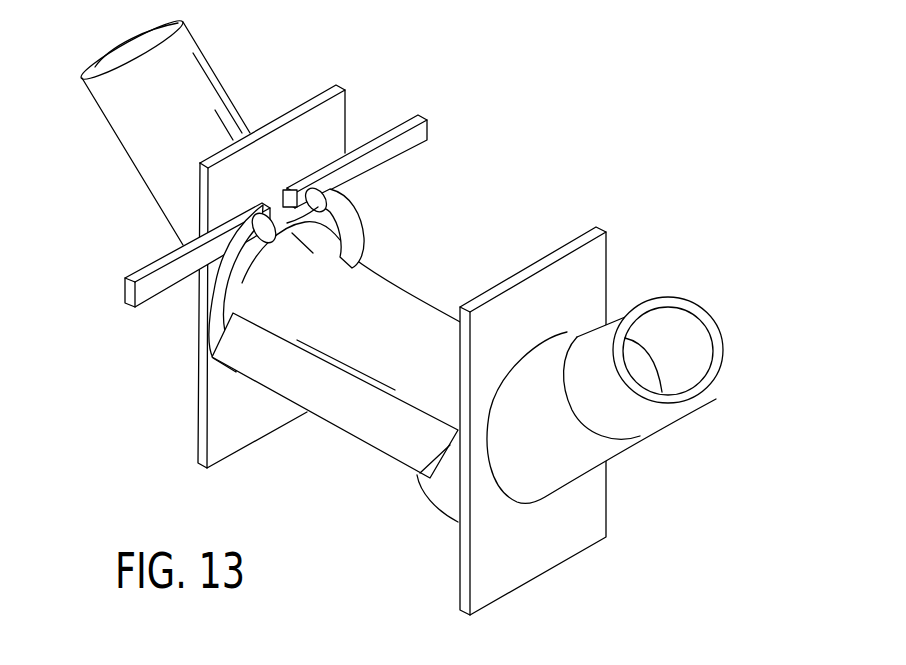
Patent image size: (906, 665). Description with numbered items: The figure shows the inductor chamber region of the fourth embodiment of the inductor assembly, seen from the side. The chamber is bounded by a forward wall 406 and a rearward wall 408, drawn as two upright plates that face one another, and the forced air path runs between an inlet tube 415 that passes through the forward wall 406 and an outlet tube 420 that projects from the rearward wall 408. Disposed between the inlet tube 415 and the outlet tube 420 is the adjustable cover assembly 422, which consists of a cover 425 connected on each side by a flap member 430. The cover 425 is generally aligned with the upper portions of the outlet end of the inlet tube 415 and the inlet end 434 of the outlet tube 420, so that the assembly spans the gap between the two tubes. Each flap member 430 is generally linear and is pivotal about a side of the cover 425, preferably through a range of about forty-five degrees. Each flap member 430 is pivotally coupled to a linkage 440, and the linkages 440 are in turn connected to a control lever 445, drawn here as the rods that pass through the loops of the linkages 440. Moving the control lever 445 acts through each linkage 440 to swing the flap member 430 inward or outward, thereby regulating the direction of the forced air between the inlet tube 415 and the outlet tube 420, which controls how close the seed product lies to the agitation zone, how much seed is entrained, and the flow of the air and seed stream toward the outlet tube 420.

The forward wall 406 is at (218, 433).
The rearward wall 408 is at (537, 550).
The inlet tube 415 is at (229, 71).
The outlet tube 420 is at (664, 437).
The adjustable cover assembly 422 is at (410, 276).
The cover 425 is at (440, 335).
The flap member 430 is at (357, 412).
The inlet end 434 is at (432, 500).
The linkage 440 is at (222, 300).
The control lever 445 is at (393, 125).